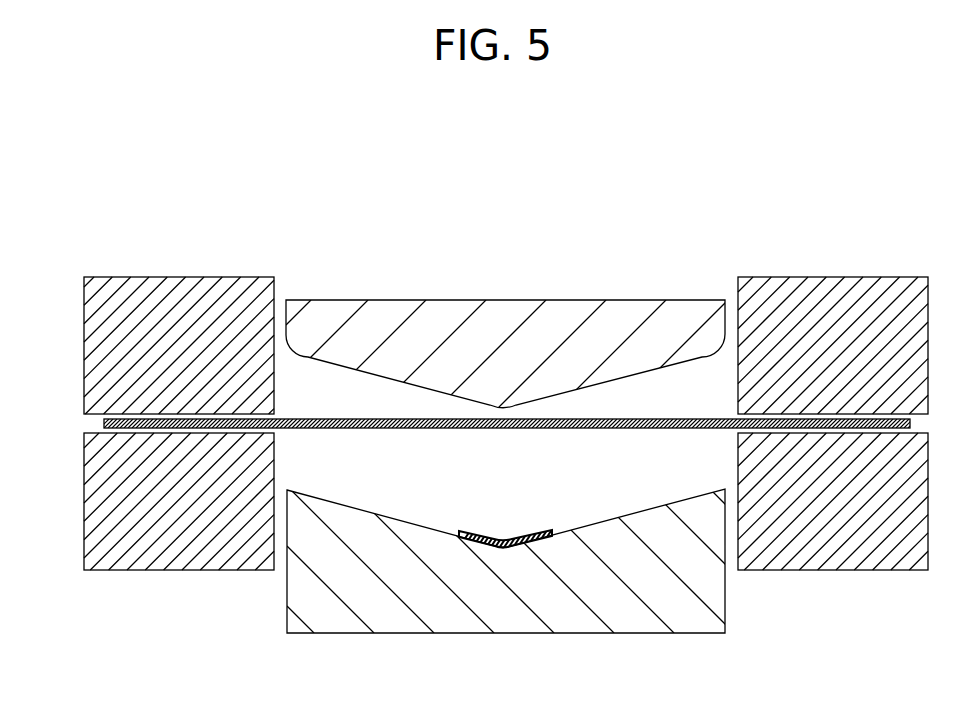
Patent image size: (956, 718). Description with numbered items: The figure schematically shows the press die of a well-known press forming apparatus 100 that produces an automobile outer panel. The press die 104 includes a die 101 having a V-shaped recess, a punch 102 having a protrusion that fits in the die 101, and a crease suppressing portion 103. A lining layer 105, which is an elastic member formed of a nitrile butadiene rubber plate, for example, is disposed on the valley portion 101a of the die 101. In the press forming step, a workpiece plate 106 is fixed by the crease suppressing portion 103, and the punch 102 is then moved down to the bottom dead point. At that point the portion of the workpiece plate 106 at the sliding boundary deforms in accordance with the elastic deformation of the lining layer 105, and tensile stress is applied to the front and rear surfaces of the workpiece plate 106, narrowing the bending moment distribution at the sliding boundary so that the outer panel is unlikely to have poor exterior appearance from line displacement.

The press forming apparatus 100 is at (488, 182).
The die 101 is at (687, 620).
The valley portion 101a is at (510, 550).
The punch 102 is at (683, 313).
The crease suppressing portion 103 is at (197, 296).
The press die 104 is at (568, 260).
The lining layer 105 is at (538, 534).
The workpiece plate 106 is at (104, 424).